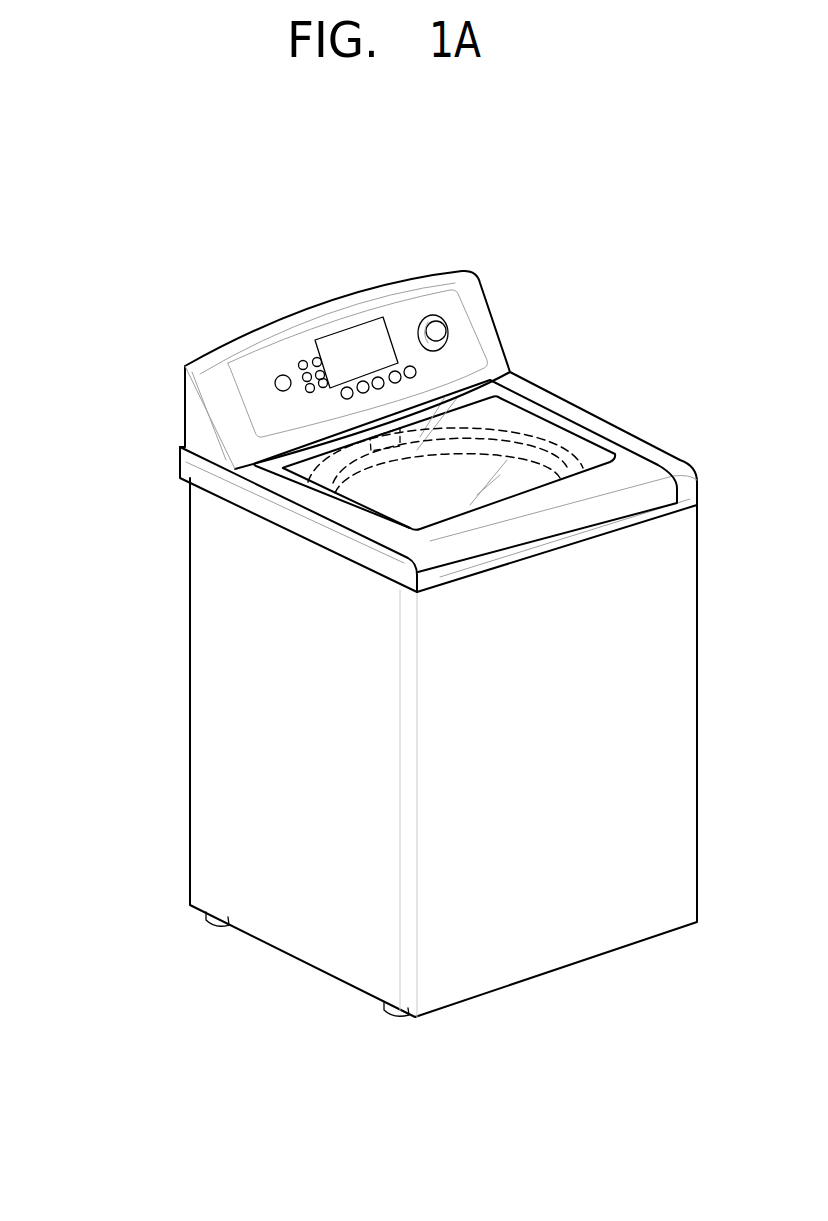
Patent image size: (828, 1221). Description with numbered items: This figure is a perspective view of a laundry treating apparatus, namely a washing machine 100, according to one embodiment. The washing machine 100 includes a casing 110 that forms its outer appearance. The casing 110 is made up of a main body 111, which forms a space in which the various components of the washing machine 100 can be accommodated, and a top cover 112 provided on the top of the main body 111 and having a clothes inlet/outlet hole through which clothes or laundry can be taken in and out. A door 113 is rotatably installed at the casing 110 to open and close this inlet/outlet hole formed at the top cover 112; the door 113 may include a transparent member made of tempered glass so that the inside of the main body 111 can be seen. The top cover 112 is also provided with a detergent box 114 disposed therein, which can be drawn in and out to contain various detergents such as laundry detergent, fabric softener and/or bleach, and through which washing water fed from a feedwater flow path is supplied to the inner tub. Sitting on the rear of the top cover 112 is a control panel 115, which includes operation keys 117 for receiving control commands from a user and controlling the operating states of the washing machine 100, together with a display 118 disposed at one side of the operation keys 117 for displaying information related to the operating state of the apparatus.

The washing machine 100 is at (104, 251).
The casing 110 is at (86, 467).
The main body 111 is at (212, 613).
The top cover 112 is at (192, 465).
The door 113 is at (578, 447).
The detergent box 114 is at (395, 430).
The control panel 115 is at (410, 222).
The operation keys 117 is at (435, 327).
The display 118 is at (346, 342).